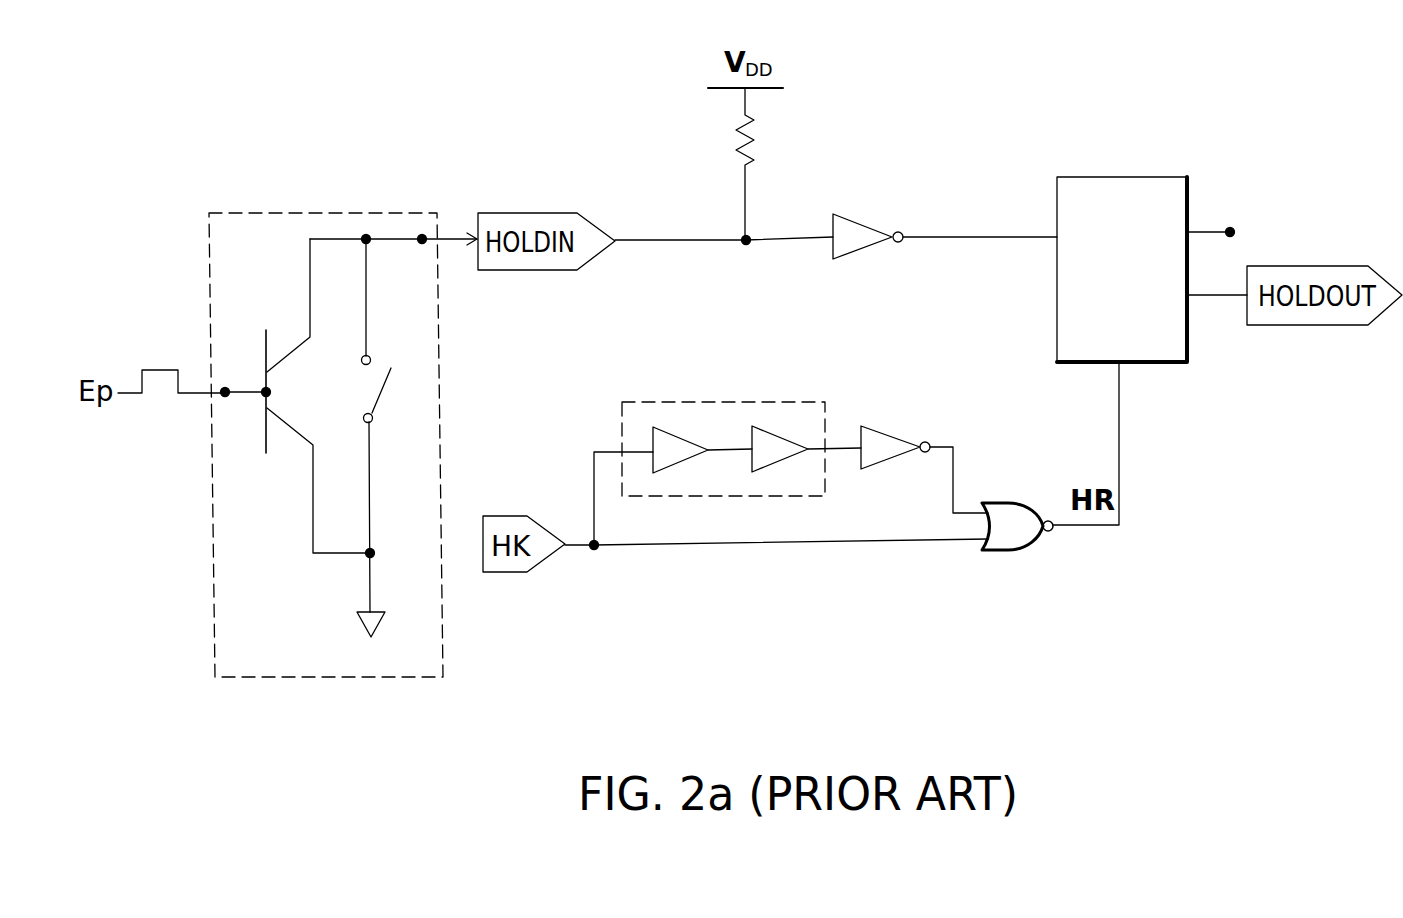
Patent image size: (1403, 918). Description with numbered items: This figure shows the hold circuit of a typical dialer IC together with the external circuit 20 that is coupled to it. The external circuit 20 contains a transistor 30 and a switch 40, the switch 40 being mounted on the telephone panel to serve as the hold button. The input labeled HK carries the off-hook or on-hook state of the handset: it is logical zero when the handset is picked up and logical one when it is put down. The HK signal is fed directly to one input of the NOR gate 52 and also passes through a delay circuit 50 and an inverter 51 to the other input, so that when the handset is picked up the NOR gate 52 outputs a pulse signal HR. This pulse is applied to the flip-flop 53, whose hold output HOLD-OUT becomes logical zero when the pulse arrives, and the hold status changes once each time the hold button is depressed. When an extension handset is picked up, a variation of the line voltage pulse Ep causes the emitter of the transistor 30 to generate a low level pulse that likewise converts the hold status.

The external circuit 20 is at (312, 208).
The transistor 30 is at (250, 425).
The switch 40 is at (388, 392).
The delay circuit 50 is at (705, 403).
The inverter 51 is at (890, 436).
The NOR gate 52 is at (1000, 503).
The flip-flop 53 is at (1115, 177).